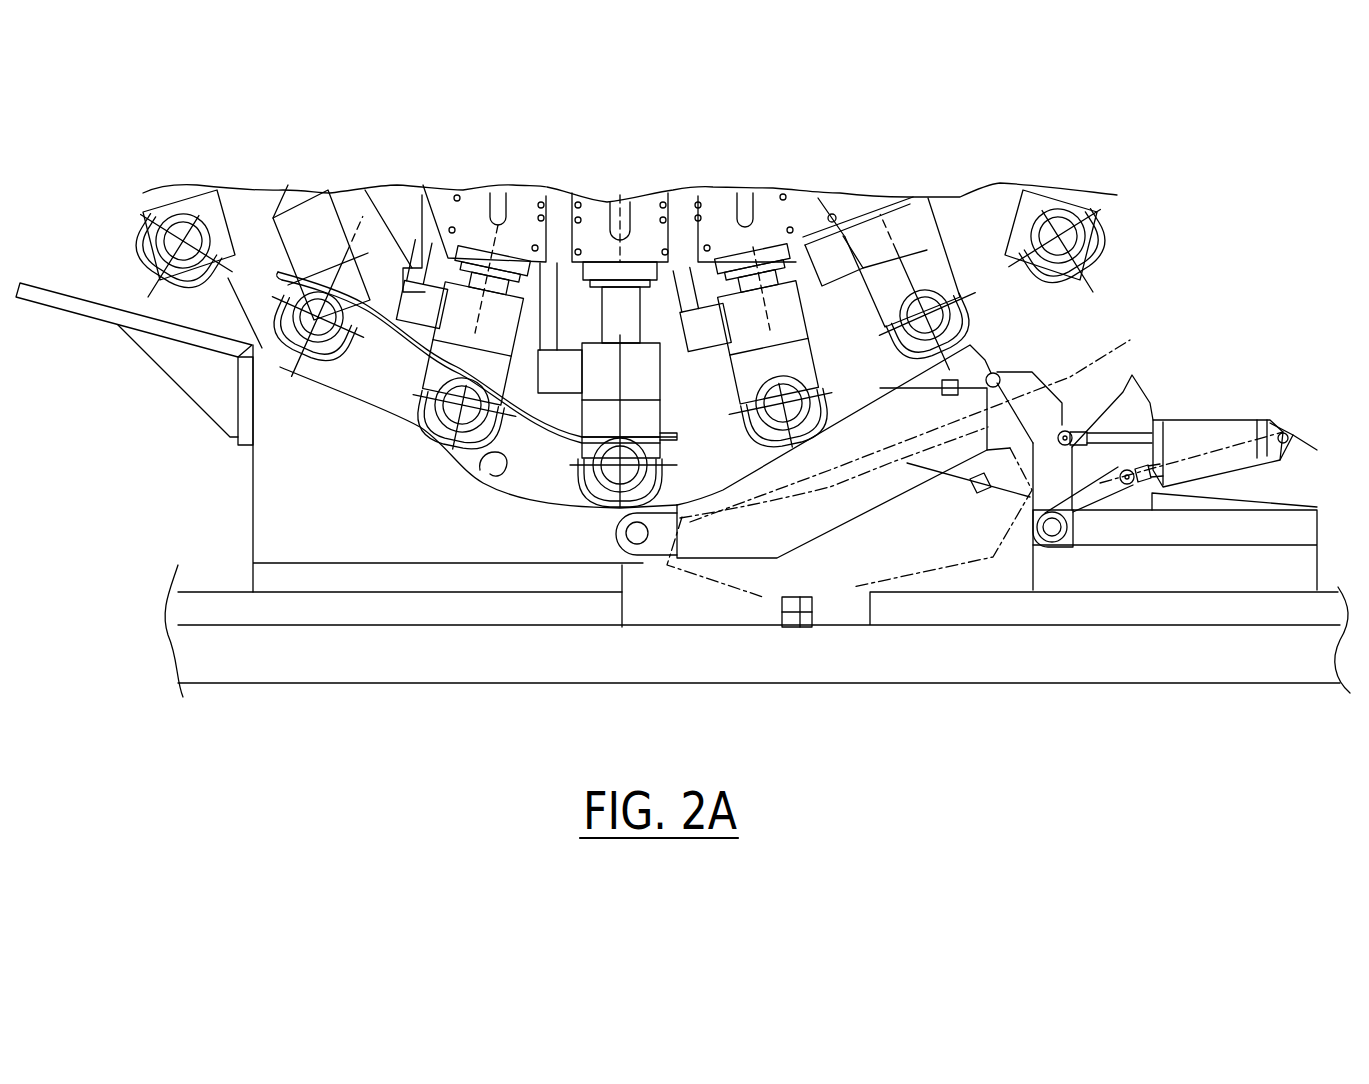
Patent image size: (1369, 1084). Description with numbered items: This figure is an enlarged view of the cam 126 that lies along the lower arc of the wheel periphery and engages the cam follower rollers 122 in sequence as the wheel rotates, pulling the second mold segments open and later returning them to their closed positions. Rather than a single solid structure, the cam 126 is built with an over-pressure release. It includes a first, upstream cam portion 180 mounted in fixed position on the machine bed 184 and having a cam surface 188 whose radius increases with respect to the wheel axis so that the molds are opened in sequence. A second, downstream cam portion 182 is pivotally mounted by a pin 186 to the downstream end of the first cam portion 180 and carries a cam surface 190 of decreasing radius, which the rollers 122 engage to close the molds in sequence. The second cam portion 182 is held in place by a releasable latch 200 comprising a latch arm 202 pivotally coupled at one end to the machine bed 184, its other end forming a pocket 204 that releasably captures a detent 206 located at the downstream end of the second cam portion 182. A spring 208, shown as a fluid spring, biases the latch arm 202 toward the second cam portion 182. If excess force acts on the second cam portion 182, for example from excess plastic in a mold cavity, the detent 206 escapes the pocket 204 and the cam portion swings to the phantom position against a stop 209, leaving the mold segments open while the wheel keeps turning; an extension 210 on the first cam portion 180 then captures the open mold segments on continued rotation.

The cam follower roller 122 is at (1097, 247).
The cam 126 is at (1285, 295).
The first cam portion 180 is at (297, 488).
The second cam portion 182 is at (817, 523).
The machine bed 184 is at (318, 653).
The pin 186 is at (640, 537).
The cam surface 188 is at (480, 470).
The cam surface 190 is at (757, 470).
The releasable latch 200 is at (1213, 348).
The latch arm 202 is at (1055, 487).
The pocket 204 is at (1123, 373).
The detent 206 is at (995, 370).
The spring 208 is at (1222, 420).
The stop 209 is at (800, 605).
The extension 210 is at (63, 310).